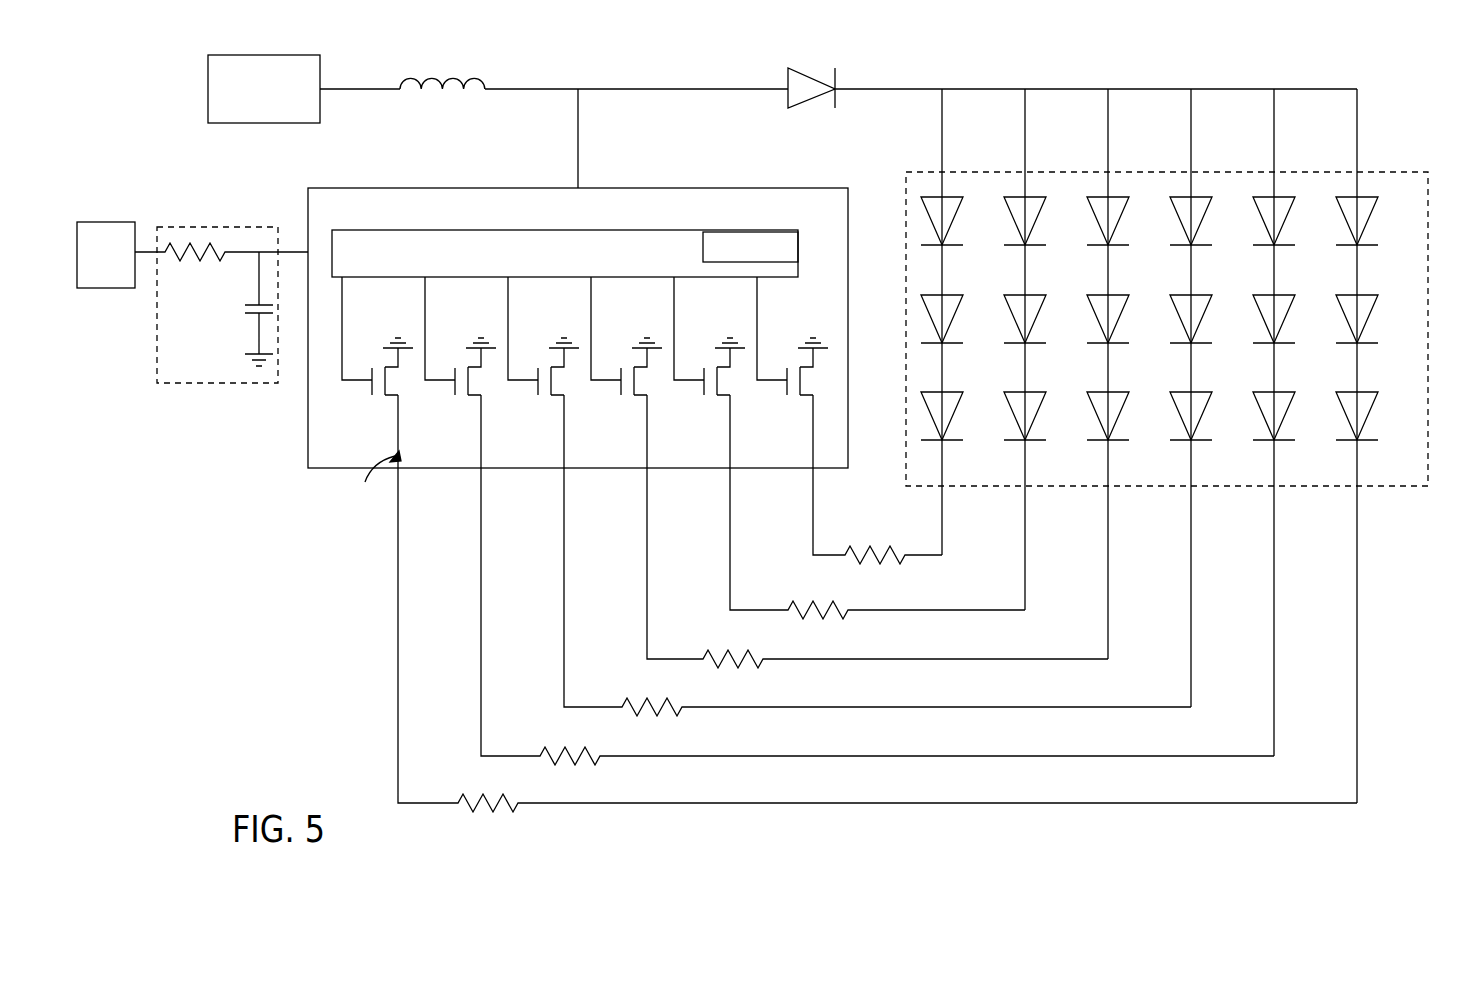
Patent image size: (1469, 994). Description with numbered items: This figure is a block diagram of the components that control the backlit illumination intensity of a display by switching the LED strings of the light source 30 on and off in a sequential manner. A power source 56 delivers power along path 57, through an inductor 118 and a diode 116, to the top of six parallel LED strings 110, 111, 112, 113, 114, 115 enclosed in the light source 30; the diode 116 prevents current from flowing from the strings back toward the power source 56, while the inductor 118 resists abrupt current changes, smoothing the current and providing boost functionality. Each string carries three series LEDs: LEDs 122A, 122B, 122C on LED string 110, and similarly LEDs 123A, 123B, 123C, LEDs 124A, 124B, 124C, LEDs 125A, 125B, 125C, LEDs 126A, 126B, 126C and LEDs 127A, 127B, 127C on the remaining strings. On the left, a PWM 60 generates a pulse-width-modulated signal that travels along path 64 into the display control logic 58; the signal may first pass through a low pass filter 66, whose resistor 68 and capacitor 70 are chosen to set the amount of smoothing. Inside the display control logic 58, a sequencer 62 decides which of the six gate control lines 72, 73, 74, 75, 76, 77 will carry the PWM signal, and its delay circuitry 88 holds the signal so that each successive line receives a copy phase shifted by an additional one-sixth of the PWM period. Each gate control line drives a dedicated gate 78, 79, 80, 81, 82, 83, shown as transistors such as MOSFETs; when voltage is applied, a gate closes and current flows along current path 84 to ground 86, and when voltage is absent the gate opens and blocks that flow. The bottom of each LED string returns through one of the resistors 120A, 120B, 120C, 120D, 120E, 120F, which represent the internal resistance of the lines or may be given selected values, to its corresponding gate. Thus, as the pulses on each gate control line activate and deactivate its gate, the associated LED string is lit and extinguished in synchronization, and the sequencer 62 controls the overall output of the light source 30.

The light source 30 is at (924, 172).
The power source 56 is at (283, 55).
The path 57 is at (340, 87).
The display control logic 58 is at (650, 188).
The PWM 60 is at (128, 222).
The sequencer 62 is at (372, 232).
The path 64 is at (298, 248).
The low pass filter 66 is at (159, 366).
The resistor 68 is at (227, 242).
The capacitor 70 is at (254, 305).
The gate control line 72 is at (346, 316).
The gate control line 73 is at (429, 316).
The gate control line 74 is at (512, 316).
The gate control line 75 is at (595, 316).
The gate control line 76 is at (678, 316).
The gate control line 77 is at (761, 316).
The gate 78 is at (375, 398).
The gate 79 is at (458, 398).
The gate 80 is at (541, 398).
The gate 81 is at (624, 398).
The gate 82 is at (707, 398).
The gate 83 is at (790, 398).
The current path 84 is at (376, 481).
The ground 86 is at (392, 338).
The delay circuitry 88 is at (788, 240).
The LED string 110 is at (1359, 190).
The LED string 111 is at (1276, 190).
The LED string 112 is at (1193, 190).
The LED string 113 is at (1110, 190).
The LED string 114 is at (1027, 190).
The LED string 115 is at (944, 190).
The diode 116 is at (792, 68).
The inductor 118 is at (462, 80).
The resistor 120A is at (524, 803).
The resistor 120B is at (606, 756).
The resistor 120C is at (688, 707).
The resistor 120D is at (770, 659).
The resistor 120E is at (849, 609).
The resistor 120F is at (845, 552).
The LED 122A is at (1369, 219).
The LED 122B is at (1369, 317).
The LED 122C is at (1369, 414).
The LED 123A is at (1286, 219).
The LED 123B is at (1286, 317).
The LED 123C is at (1286, 414).
The LED 124A is at (1203, 219).
The LED 124B is at (1203, 317).
The LED 124C is at (1203, 414).
The LED 125A is at (1120, 219).
The LED 125B is at (1120, 317).
The LED 125C is at (1120, 414).
The LED 126A is at (1037, 219).
The LED 126B is at (1037, 317).
The LED 126C is at (1037, 414).
The LED 127A is at (954, 219).
The LED 127B is at (954, 317).
The LED 127C is at (954, 414).